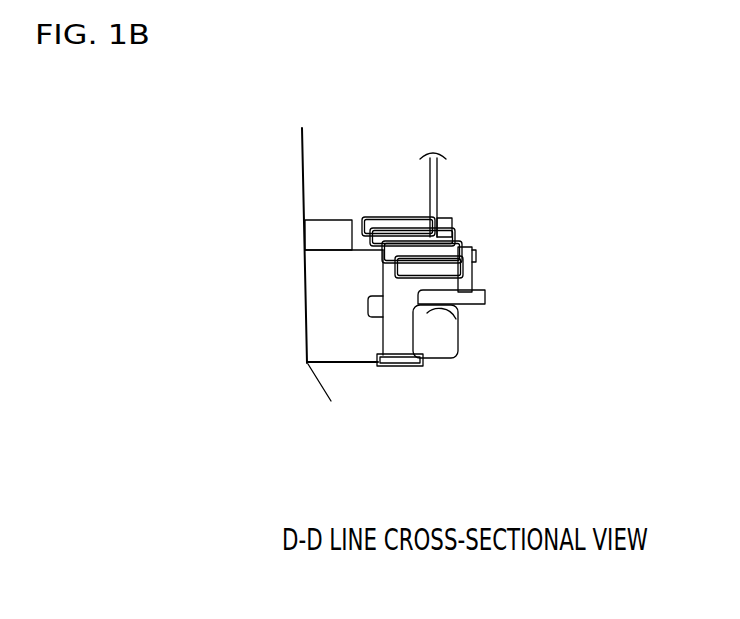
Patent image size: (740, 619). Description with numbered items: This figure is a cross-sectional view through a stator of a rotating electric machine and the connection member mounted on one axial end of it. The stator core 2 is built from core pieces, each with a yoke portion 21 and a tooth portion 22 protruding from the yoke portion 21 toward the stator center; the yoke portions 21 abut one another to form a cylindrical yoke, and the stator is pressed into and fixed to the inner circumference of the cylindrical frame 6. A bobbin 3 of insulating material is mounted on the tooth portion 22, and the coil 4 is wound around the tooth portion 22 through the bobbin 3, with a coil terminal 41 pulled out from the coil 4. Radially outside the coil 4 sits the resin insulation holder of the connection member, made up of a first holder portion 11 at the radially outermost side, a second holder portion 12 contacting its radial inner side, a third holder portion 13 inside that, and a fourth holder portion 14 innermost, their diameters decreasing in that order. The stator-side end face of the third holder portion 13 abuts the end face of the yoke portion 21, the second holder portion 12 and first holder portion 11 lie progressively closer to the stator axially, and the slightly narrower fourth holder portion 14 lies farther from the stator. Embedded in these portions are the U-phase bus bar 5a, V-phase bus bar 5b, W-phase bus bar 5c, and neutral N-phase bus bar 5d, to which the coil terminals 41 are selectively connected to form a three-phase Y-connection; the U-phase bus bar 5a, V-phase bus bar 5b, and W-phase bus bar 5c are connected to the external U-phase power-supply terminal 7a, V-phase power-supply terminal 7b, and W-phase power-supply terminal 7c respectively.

The stator core 2 is at (320, 323).
The tooth portion 22 is at (337, 348).
The yoke portion 21 is at (317, 263).
The frame 6 is at (305, 228).
The fourth holder portion 14 is at (383, 272).
The bobbin 3 is at (400, 345).
The coil 4 is at (443, 342).
The coil terminal 41 is at (487, 298).
The U-phase bus bar 5a is at (375, 220).
The V-phase bus bar 5b is at (392, 222).
The W-phase bus bar 5c is at (398, 220).
The N-phase bus bar 5d is at (472, 265).
The external U-phase power-supply terminal 7a is at (530, 177).
The external V-phase power-supply terminal 7b is at (530, 177).
The external W-phase power-supply terminal 7c is at (445, 157).
The first holder portion 11 is at (453, 222).
The second holder portion 12 is at (457, 241).
The third holder portion 13 is at (470, 254).